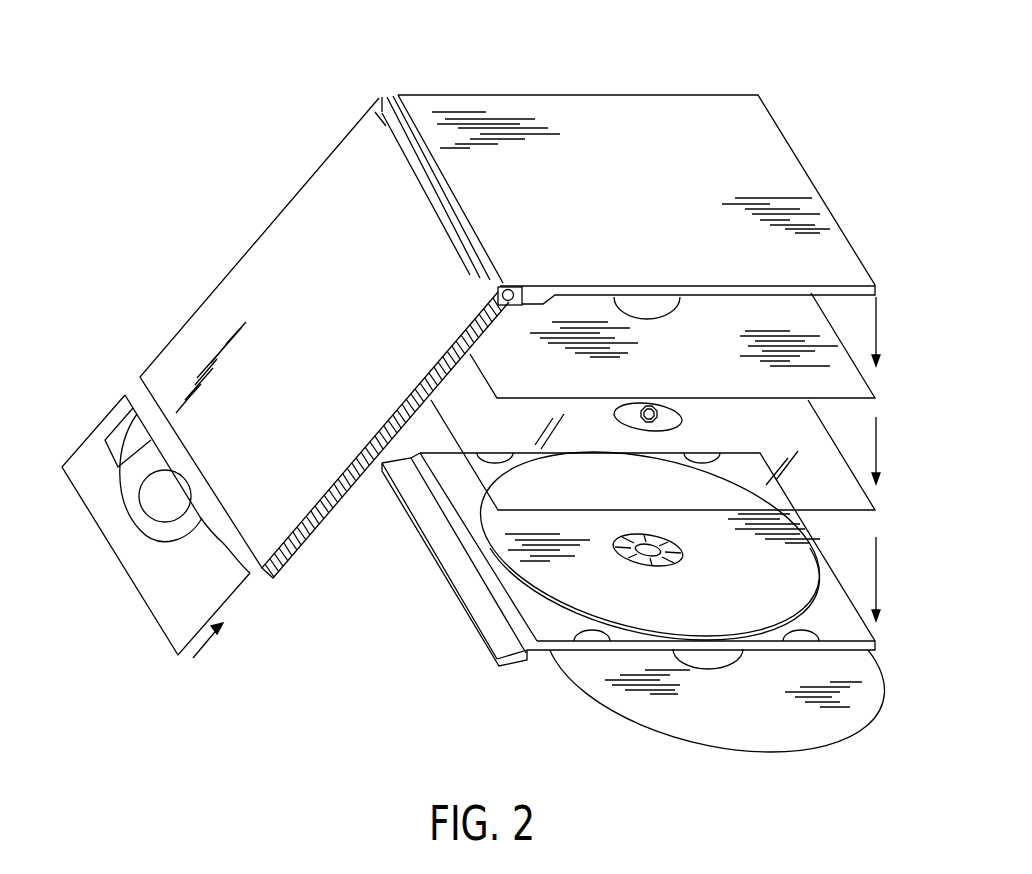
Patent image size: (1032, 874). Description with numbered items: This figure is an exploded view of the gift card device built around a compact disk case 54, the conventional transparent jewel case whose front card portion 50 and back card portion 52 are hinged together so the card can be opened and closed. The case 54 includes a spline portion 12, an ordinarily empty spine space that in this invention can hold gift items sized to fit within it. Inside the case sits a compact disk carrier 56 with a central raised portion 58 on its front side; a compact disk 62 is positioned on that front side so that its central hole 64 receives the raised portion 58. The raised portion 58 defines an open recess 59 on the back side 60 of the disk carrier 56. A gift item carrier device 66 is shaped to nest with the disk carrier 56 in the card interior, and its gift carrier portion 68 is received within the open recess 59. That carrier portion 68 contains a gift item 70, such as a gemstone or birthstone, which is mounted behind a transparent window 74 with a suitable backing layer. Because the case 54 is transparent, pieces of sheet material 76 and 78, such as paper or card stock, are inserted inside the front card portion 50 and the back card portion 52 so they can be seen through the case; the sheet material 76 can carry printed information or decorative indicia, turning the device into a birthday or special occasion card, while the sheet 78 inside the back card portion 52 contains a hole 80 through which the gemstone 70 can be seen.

The spline portion 12 is at (393, 93).
The front card portion 50 is at (263, 260).
The back card portion 52 is at (780, 162).
The compact disk case 54 is at (295, 166).
The compact disk carrier 56 is at (457, 595).
The central raised portion 58 is at (676, 558).
The open recess 59 is at (643, 535).
The back side 60 is at (619, 601).
The compact disk 62 is at (760, 738).
The central hole 64 is at (718, 664).
The gift item carrier device 66 is at (850, 500).
The gift carrier portion 68 is at (686, 431).
The gift item 70 is at (650, 424).
The transparent window 74 is at (674, 410).
The sheet material 76 is at (167, 623).
The sheet 78 is at (850, 383).
The hole 80 is at (667, 302).